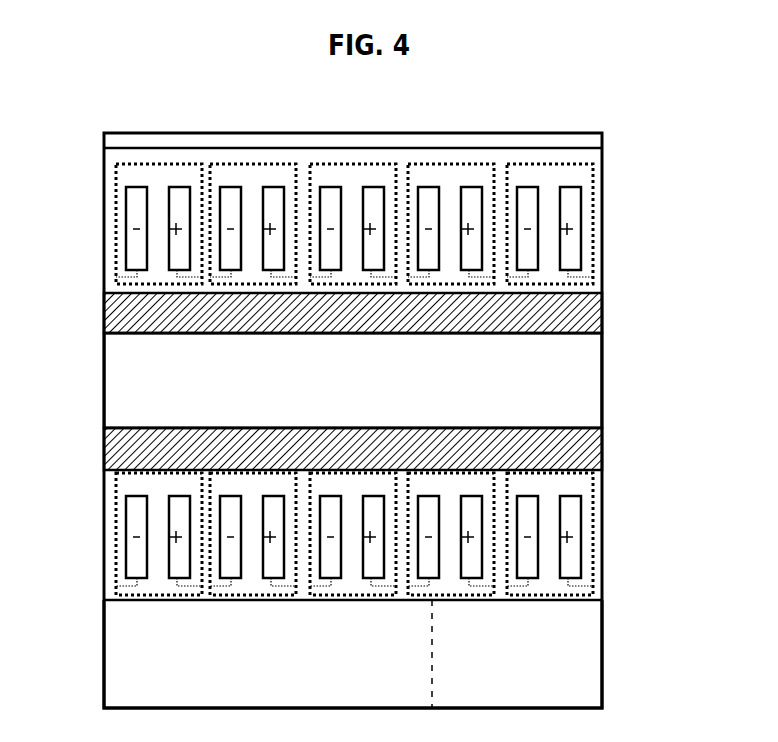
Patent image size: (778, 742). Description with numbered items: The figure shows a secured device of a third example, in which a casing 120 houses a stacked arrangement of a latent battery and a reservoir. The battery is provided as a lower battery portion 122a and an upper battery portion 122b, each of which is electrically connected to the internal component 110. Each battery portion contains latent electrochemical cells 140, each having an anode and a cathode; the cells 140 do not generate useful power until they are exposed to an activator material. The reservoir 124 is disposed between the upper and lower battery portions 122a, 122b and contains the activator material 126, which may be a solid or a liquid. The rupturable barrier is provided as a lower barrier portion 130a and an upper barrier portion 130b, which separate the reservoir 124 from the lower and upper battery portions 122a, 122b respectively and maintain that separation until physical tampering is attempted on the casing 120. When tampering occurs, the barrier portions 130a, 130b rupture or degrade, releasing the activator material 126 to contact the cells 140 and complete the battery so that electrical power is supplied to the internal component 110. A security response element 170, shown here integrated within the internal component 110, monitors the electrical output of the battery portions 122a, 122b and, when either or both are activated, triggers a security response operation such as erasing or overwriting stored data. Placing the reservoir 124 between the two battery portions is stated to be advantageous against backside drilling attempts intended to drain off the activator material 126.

The internal component 110 is at (353, 654).
The security response element 170 is at (517, 654).
The casing 120 is at (588, 143).
The lower battery portion 122a is at (98, 473).
The upper battery portion 122b is at (98, 163).
The reservoir 124 is at (98, 333).
The activator material 126 is at (581, 377).
The lower barrier portion 130a is at (590, 452).
The upper barrier portion 130b is at (590, 318).
The cell 140 is at (586, 243).